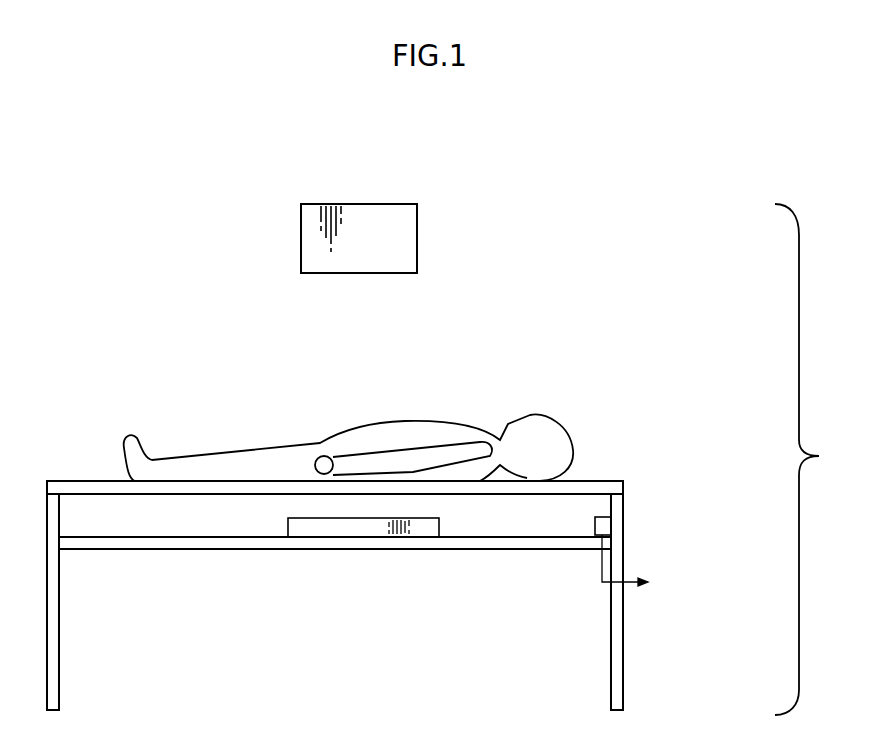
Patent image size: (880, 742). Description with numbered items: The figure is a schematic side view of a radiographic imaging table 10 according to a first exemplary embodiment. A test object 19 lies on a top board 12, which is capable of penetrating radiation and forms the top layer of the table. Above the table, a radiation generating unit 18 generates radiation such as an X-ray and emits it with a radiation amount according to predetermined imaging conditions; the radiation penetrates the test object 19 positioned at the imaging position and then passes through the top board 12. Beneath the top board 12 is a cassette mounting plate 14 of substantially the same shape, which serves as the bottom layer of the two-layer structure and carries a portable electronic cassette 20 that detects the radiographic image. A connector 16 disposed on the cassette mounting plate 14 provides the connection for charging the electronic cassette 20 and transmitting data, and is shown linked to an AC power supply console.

The radiographic imaging table 10 is at (657, 467).
The top board 12 is at (75, 490).
The cassette mounting plate 14 is at (118, 542).
The connector 16 is at (595, 523).
The radiation generating unit 18 is at (409, 240).
The test object 19 is at (549, 437).
The electronic cassette 20 is at (345, 527).